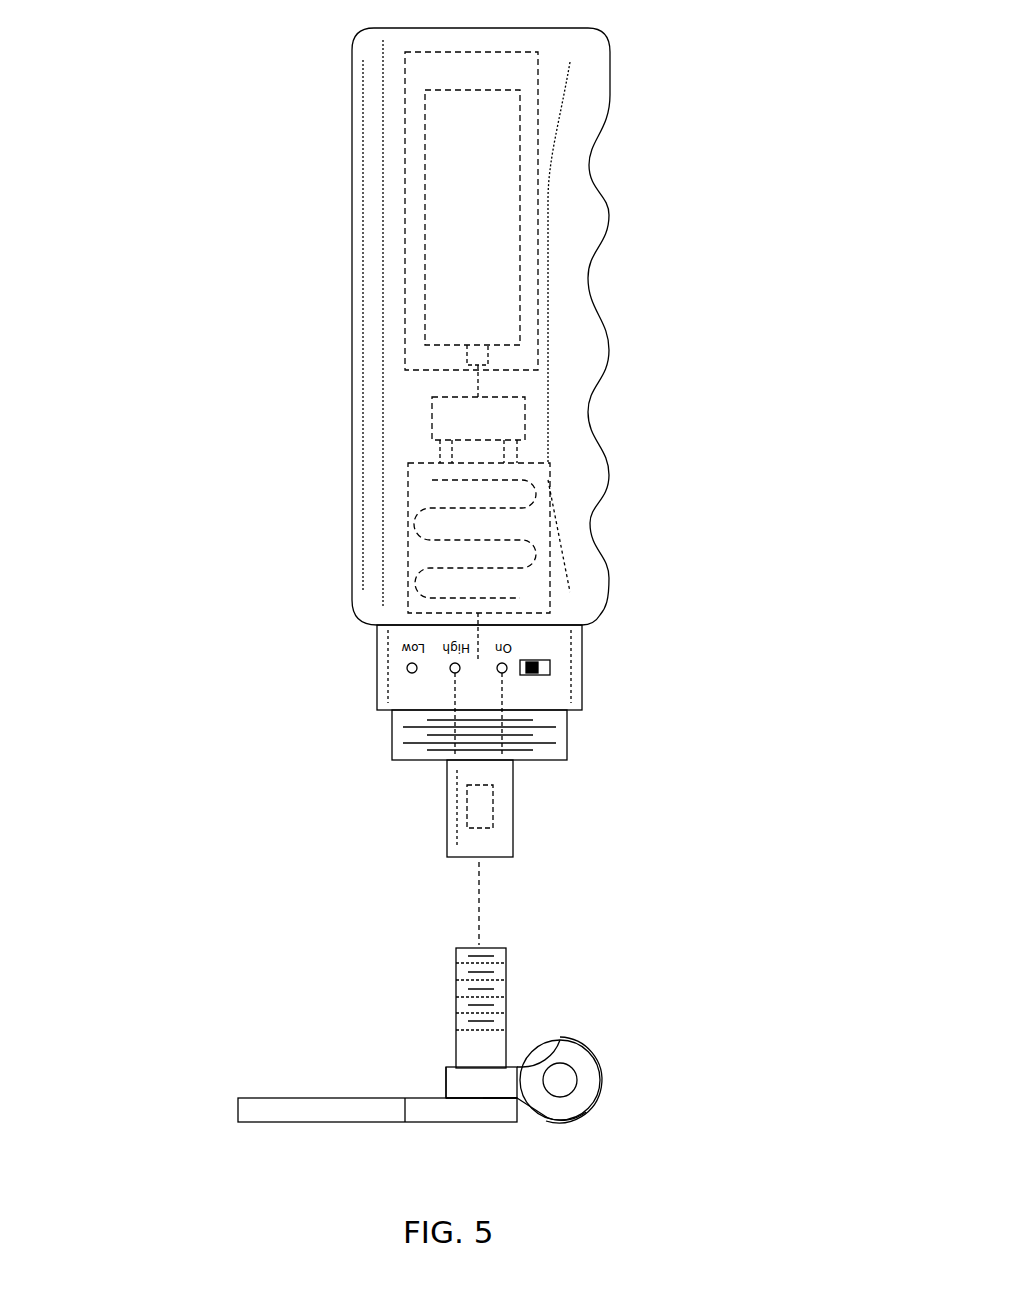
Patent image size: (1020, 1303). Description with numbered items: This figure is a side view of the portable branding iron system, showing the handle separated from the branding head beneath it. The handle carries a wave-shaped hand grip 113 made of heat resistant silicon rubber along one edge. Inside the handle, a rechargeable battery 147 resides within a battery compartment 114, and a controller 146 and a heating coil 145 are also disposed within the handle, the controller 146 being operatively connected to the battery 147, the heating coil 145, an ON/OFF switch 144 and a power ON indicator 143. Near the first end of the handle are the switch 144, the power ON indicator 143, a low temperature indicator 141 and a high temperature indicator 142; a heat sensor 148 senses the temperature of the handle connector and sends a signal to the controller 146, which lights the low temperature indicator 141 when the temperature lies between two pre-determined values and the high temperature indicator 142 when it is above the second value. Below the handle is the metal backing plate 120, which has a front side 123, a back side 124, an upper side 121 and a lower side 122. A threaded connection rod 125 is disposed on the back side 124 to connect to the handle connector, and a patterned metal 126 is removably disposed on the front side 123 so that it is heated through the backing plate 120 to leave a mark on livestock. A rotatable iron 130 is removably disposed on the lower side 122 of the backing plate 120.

The hand grip 113 is at (600, 167).
The battery compartment 114 is at (410, 77).
The rechargeable battery 147 is at (425, 230).
The controller 146 is at (455, 428).
The heating coil 145 is at (475, 503).
The low temperature indicator 141 is at (407, 670).
The high temperature indicator 142 is at (451, 672).
The power ON indicator 143 is at (506, 672).
The ON/OFF switch 144 is at (550, 667).
The heat sensor 148 is at (490, 812).
The threaded connection rod 125 is at (456, 985).
The back side 124 is at (475, 1067).
The upper side 121 is at (447, 1083).
The metal backing plate 120 is at (447, 1095).
The patterned metal 126 is at (255, 1110).
The rotatable iron 130 is at (582, 1062).
The lower side 122 is at (528, 1105).
The front side 123 is at (483, 1100).